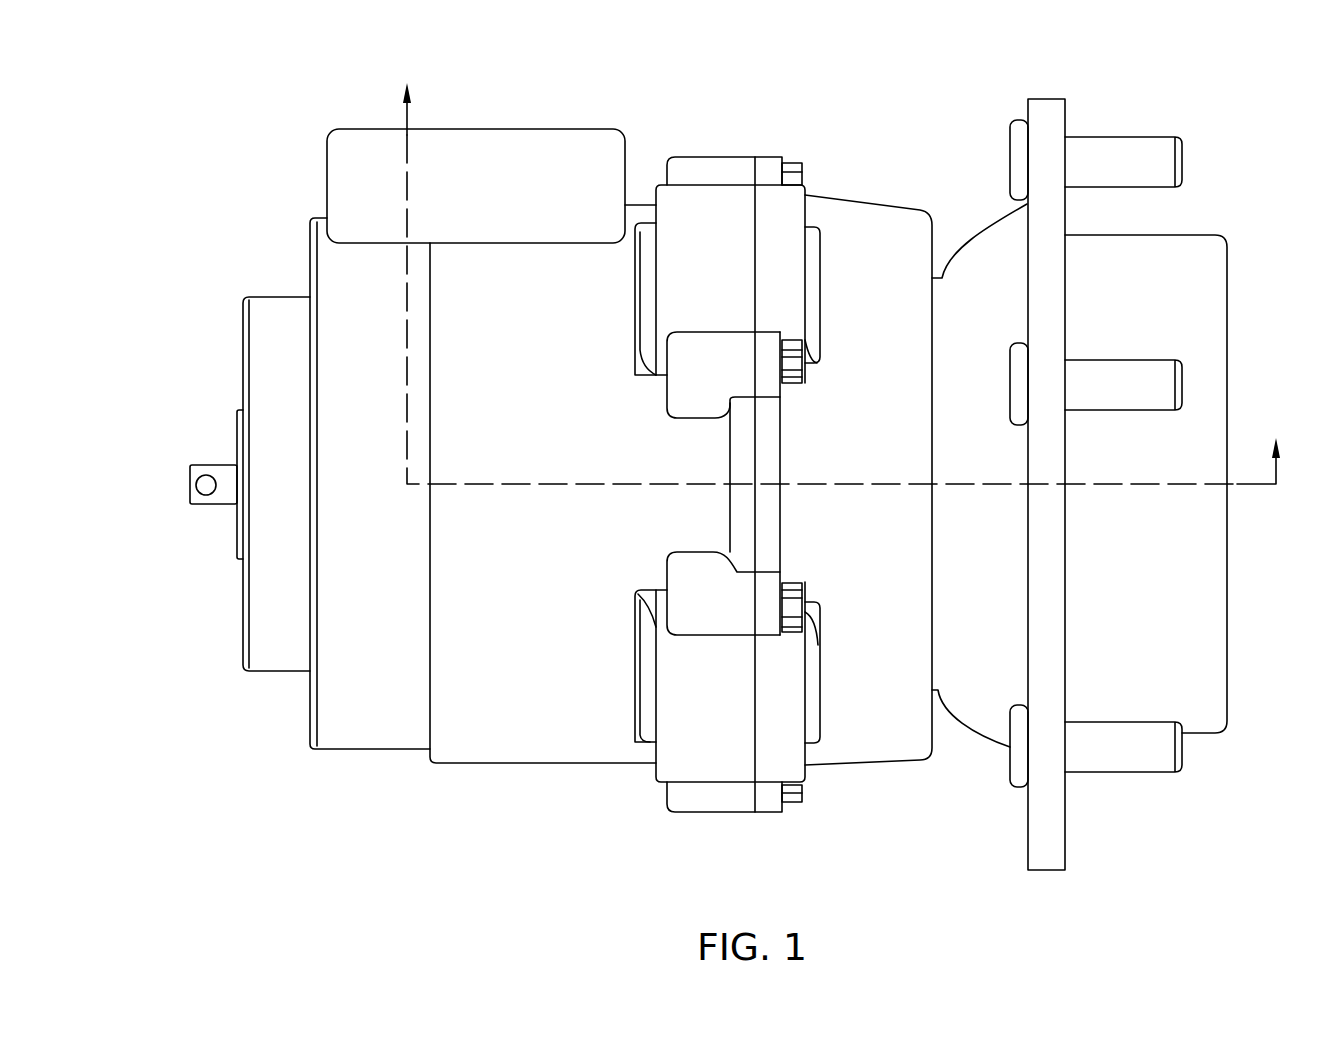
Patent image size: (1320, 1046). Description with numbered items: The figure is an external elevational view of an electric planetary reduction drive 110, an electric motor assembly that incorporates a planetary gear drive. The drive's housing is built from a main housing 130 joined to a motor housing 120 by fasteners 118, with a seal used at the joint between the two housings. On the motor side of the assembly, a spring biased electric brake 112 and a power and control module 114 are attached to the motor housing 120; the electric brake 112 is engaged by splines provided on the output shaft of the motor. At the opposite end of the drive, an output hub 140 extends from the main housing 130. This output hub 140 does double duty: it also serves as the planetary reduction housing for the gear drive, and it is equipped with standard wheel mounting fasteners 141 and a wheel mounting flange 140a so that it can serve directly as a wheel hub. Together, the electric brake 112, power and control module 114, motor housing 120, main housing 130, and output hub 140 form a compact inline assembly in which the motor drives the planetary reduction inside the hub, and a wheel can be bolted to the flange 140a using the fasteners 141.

The electric planetary reduction drive 110 is at (200, 112).
The spring biased electric brake 112 is at (395, 568).
The power and control module 114 is at (537, 188).
The fasteners 118 is at (803, 176).
The motor housing 120 is at (564, 425).
The main housing 130 is at (878, 425).
The output hub 140 is at (1171, 307).
The wheel mounting flange 140a is at (1066, 830).
The wheel mounting fasteners 141 is at (1163, 135).